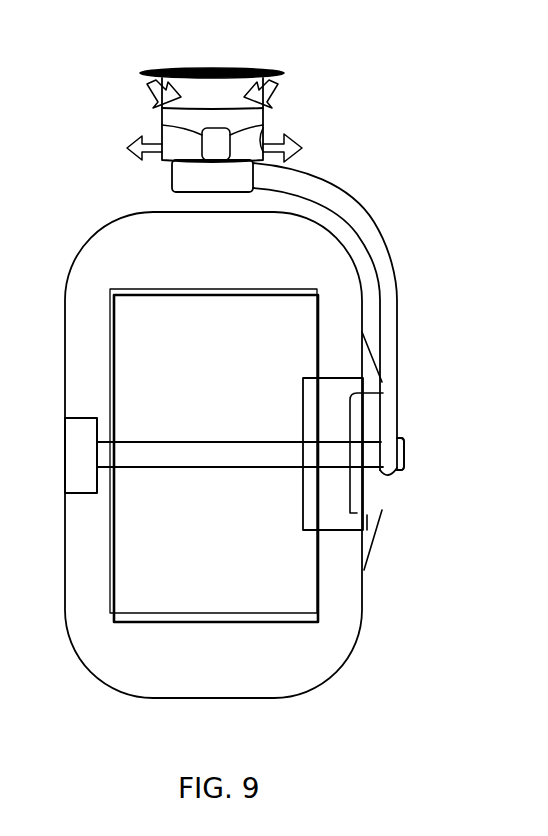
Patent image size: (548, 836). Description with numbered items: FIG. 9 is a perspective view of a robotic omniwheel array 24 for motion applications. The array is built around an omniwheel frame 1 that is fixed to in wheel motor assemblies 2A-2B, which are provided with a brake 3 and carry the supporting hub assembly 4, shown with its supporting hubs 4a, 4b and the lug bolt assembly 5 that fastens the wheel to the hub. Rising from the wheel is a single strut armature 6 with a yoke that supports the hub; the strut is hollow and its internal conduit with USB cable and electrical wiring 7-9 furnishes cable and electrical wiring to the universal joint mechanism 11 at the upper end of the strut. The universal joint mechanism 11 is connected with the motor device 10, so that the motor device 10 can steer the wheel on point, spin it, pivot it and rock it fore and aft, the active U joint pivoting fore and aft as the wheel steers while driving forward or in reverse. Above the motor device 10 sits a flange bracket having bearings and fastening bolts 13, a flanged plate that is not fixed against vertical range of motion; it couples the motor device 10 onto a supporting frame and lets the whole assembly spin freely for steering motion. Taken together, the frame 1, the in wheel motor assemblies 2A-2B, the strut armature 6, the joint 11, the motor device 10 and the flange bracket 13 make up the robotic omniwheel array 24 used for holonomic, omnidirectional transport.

The omniwheel frame 1 is at (93, 240).
The in wheel motor assemblies 2A-2B is at (227, 289).
The brake 3 is at (383, 410).
The hub assembly 4 is at (328, 463).
The supporting hub 4a is at (72, 464).
The supporting hub 4b is at (403, 456).
The lug bolt assembly 5 is at (400, 454).
The single strut armature with yoke 6 is at (368, 213).
The conduit with USB cable and electrical wiring 7-9 is at (190, 187).
The motor device 10 is at (167, 107).
The universal joint mechanism 11 is at (162, 125).
The flange bracket with bearings and fastening bolts 13 is at (277, 70).
The robotic omniwheel array 24 is at (153, 48).